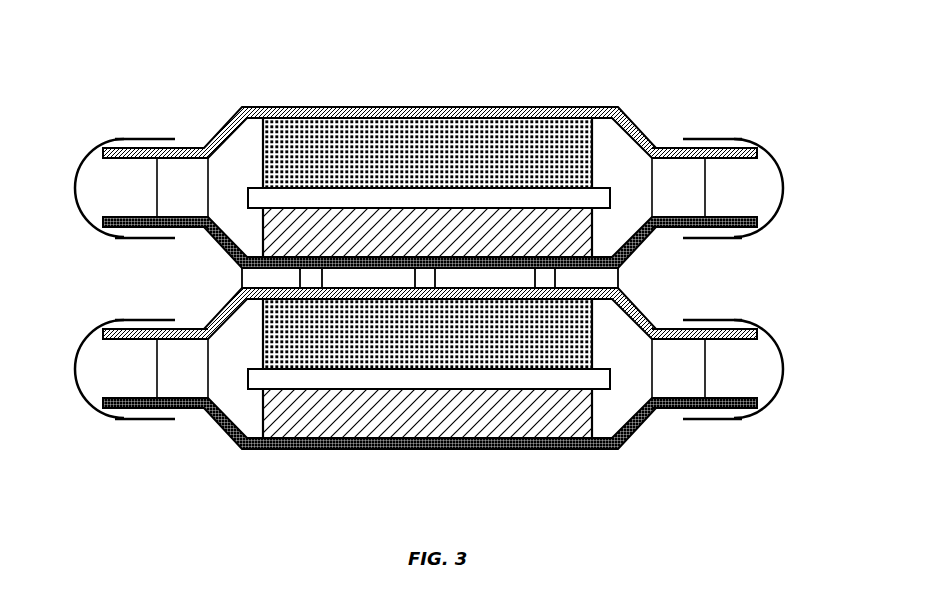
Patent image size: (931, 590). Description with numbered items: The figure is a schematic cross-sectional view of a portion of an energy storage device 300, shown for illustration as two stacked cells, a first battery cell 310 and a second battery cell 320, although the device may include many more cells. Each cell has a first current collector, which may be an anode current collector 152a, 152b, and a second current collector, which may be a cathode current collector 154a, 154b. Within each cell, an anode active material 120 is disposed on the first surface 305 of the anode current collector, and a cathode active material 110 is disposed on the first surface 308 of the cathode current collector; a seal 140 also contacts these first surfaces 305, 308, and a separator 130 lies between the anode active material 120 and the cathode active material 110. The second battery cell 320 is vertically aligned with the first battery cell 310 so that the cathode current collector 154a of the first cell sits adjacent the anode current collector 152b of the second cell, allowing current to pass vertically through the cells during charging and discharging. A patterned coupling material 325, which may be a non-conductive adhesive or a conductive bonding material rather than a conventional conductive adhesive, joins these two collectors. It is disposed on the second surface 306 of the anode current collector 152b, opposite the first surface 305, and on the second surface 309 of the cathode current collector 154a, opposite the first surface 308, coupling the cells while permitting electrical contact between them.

The energy storage device 300 is at (106, 85).
The cathode active material 110 is at (462, 107).
The anode active material 120 is at (287, 208).
The separator 130 is at (368, 188).
The seal 140 is at (157, 173).
The first surface of first current collector 305 is at (103, 218).
The second surface of anode current collector 306 is at (220, 245).
The first surface of second current collector 308 is at (103, 338).
The second surface of cathode current collector 309 is at (217, 312).
The patterned coupling material 325 is at (618, 286).
The cathode current collector of first battery cell 154a is at (710, 330).
The cathode current collector 154b is at (710, 149).
The anode current collector 152a is at (760, 410).
The anode current collector of second battery cell 152b is at (760, 228).
The first battery cell 310 is at (763, 340).
The second battery cell 320 is at (760, 158).